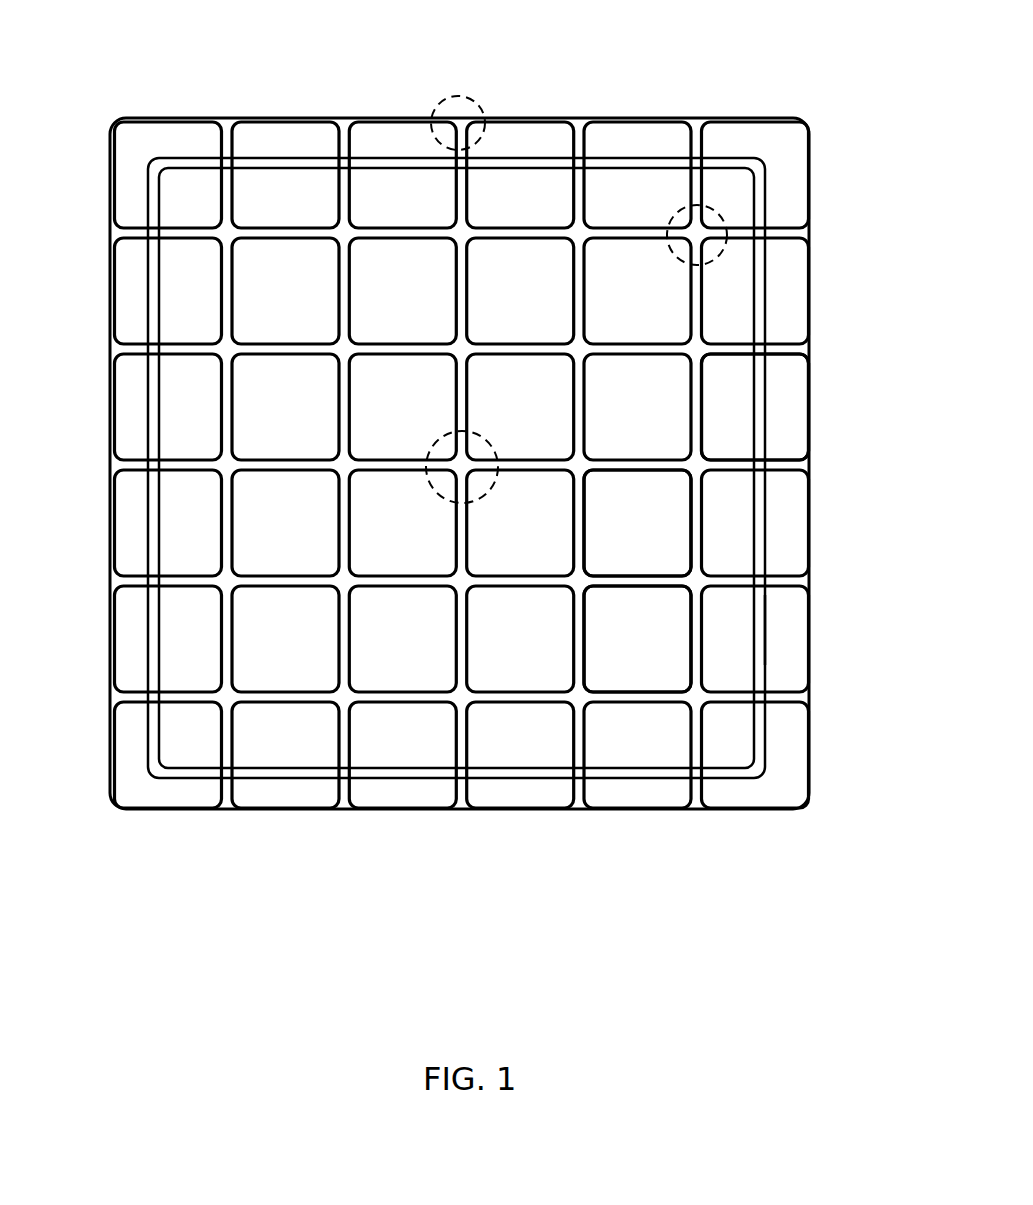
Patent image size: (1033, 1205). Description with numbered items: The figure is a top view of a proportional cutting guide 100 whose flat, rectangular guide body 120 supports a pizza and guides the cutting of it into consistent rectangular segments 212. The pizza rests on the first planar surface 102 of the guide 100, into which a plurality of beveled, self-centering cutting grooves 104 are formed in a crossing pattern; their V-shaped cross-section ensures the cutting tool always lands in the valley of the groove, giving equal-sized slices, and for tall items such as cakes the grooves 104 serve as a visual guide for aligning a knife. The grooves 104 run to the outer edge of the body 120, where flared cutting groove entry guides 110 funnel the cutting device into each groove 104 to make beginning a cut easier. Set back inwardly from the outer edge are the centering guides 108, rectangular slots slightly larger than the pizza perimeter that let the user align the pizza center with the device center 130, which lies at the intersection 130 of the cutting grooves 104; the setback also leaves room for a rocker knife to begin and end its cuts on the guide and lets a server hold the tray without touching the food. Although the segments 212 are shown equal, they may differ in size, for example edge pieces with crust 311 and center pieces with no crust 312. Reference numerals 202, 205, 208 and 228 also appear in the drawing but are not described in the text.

The proportional cutting guide 100 is at (772, 30).
The first planar surface 102 is at (300, 420).
The cutting grooves 104 is at (138, 340).
The centering guides 108 is at (148, 163).
The cutting groove entry guides 110 is at (480, 108).
The guide body 120 is at (170, 118).
The device center 130 is at (437, 440).
The inner frame wall 202 is at (200, 227).
The inner frame side wall 205 is at (767, 630).
The compartment 208 is at (301, 640).
The segments 212 is at (640, 636).
The corner junction 228 is at (722, 220).
The edge pieces with crust 311 is at (268, 186).
The center pieces with no crust 312 is at (412, 272).